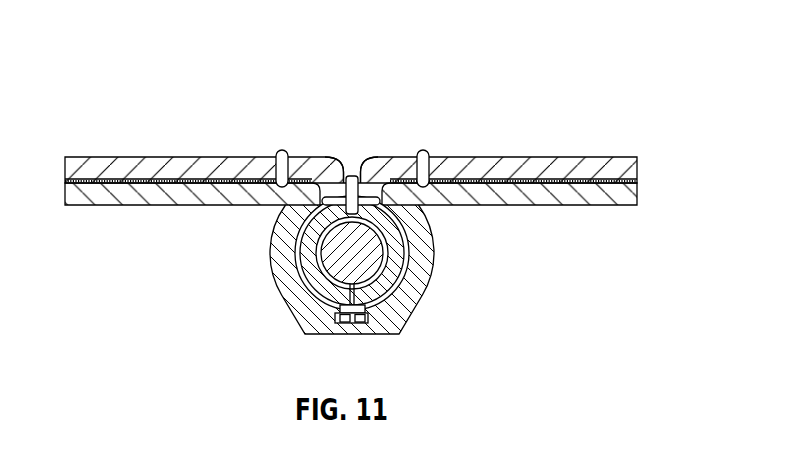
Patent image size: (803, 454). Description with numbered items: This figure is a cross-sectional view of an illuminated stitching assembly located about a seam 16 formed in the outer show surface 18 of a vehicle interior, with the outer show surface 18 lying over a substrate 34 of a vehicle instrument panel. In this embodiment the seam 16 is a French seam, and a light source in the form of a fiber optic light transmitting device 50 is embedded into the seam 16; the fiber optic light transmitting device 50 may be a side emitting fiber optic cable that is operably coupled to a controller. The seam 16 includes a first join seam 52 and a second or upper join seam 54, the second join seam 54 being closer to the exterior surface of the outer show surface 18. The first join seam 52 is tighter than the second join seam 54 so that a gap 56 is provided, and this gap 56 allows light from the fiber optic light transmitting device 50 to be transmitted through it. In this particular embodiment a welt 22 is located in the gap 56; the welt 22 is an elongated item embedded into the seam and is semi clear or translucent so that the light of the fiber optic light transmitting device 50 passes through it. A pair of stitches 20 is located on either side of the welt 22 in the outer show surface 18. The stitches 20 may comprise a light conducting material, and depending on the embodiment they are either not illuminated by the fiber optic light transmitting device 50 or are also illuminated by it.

The seam 16 is at (340, 150).
The outer show surface 18 is at (572, 167).
The stitches 20 is at (282, 150).
The welt 22 is at (422, 225).
The substrate 34 is at (512, 193).
The fiber optic light transmitting device 50 is at (296, 280).
The first join seam 52 is at (397, 333).
The second join seam 54 is at (330, 255).
The gap 56 is at (357, 156).